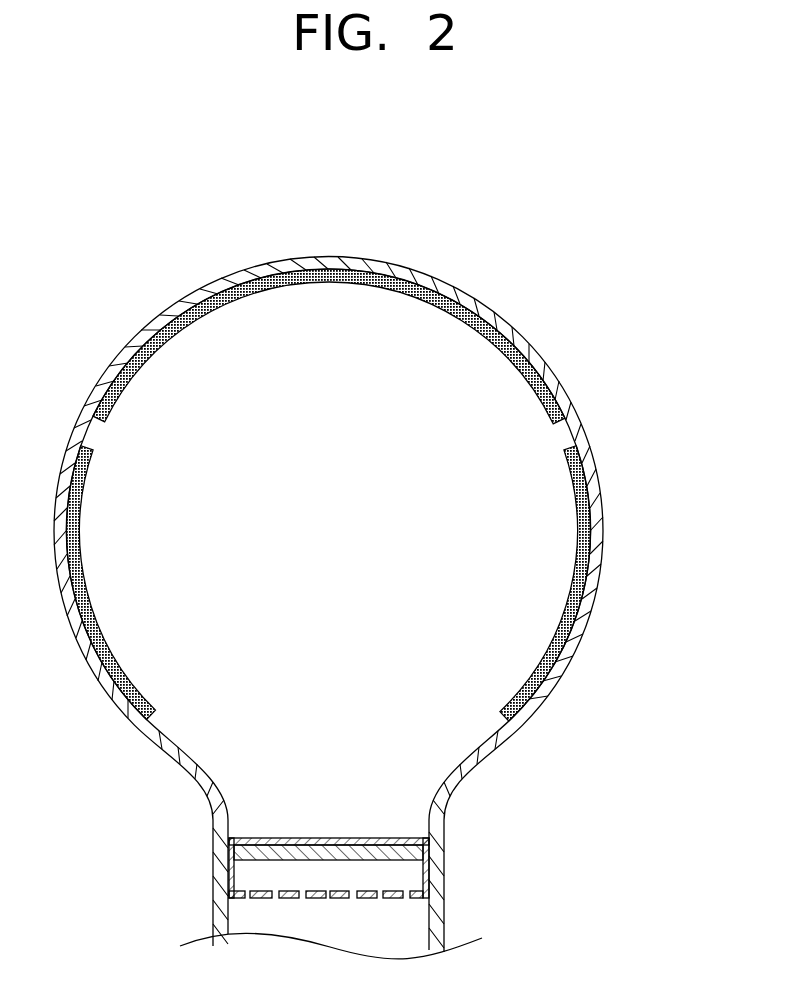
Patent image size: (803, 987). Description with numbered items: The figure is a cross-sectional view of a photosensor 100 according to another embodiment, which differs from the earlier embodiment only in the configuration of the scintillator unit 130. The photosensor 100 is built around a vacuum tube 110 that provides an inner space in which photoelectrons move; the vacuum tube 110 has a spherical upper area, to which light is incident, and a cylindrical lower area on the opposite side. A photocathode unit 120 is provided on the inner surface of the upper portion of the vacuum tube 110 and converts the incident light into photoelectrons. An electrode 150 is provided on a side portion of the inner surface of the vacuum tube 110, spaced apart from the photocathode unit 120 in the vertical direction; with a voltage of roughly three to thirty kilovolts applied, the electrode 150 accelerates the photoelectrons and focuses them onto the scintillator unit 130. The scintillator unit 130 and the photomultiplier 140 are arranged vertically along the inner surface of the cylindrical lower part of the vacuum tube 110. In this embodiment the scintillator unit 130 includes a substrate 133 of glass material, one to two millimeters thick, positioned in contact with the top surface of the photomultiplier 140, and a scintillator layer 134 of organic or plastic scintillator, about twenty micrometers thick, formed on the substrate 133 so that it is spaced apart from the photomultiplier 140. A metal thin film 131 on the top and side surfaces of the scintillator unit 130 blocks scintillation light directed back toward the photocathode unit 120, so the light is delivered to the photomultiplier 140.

The photosensor 100 is at (492, 154).
The vacuum tube 110 is at (502, 742).
The photocathode unit 120 is at (487, 333).
The scintillator unit 130 is at (411, 852).
The metal thin film 131 is at (400, 837).
The substrate 133 is at (413, 877).
The scintillator layer 134 is at (431, 849).
The photomultiplier 140 is at (393, 899).
The electrode 150 is at (577, 575).